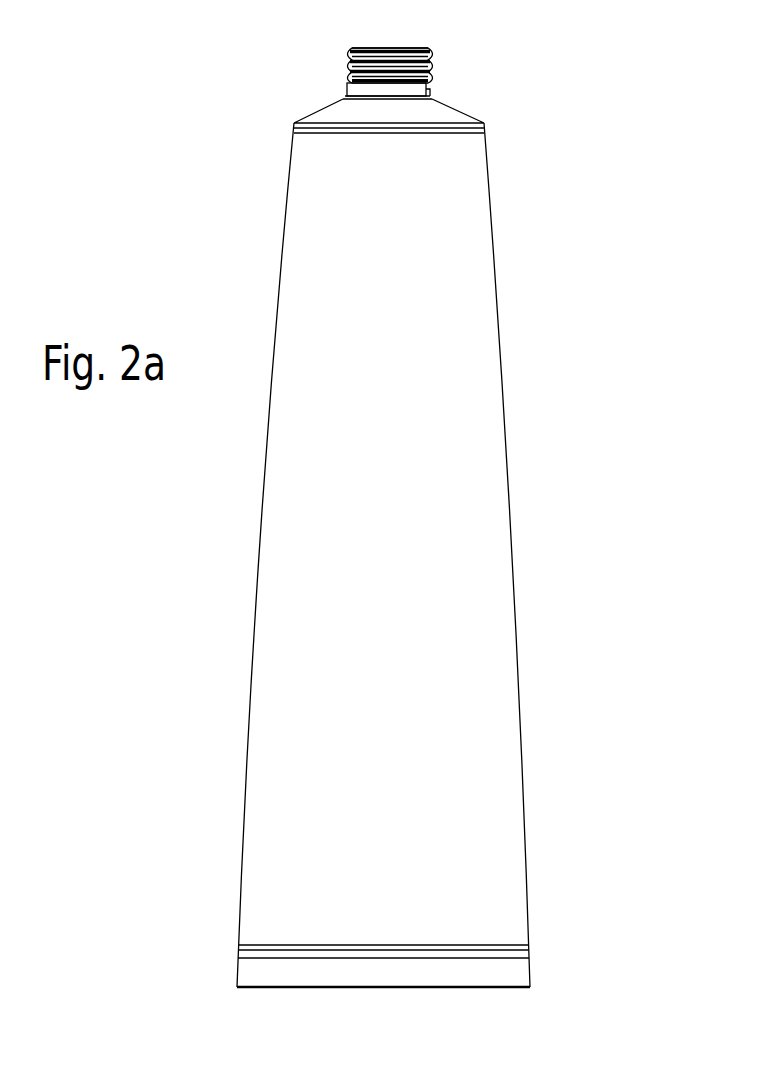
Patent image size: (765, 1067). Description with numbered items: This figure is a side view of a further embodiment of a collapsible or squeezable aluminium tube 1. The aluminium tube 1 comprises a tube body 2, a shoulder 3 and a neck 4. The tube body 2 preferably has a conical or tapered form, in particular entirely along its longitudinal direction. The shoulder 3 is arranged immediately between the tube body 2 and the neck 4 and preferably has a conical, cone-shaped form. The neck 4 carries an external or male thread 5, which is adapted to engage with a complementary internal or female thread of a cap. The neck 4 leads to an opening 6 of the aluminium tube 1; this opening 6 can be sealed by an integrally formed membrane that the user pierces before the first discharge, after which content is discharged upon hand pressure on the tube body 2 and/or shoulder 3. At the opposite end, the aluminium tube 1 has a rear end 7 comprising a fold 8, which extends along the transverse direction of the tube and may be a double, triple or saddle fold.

The aluminium tube 1 is at (614, 178).
The tube body 2 is at (485, 356).
The shoulder 3 is at (448, 118).
The neck 4 is at (347, 90).
The external or male thread 5 is at (433, 70).
The opening 6 is at (403, 49).
The rear end 7 is at (531, 965).
The fold 8 is at (287, 959).